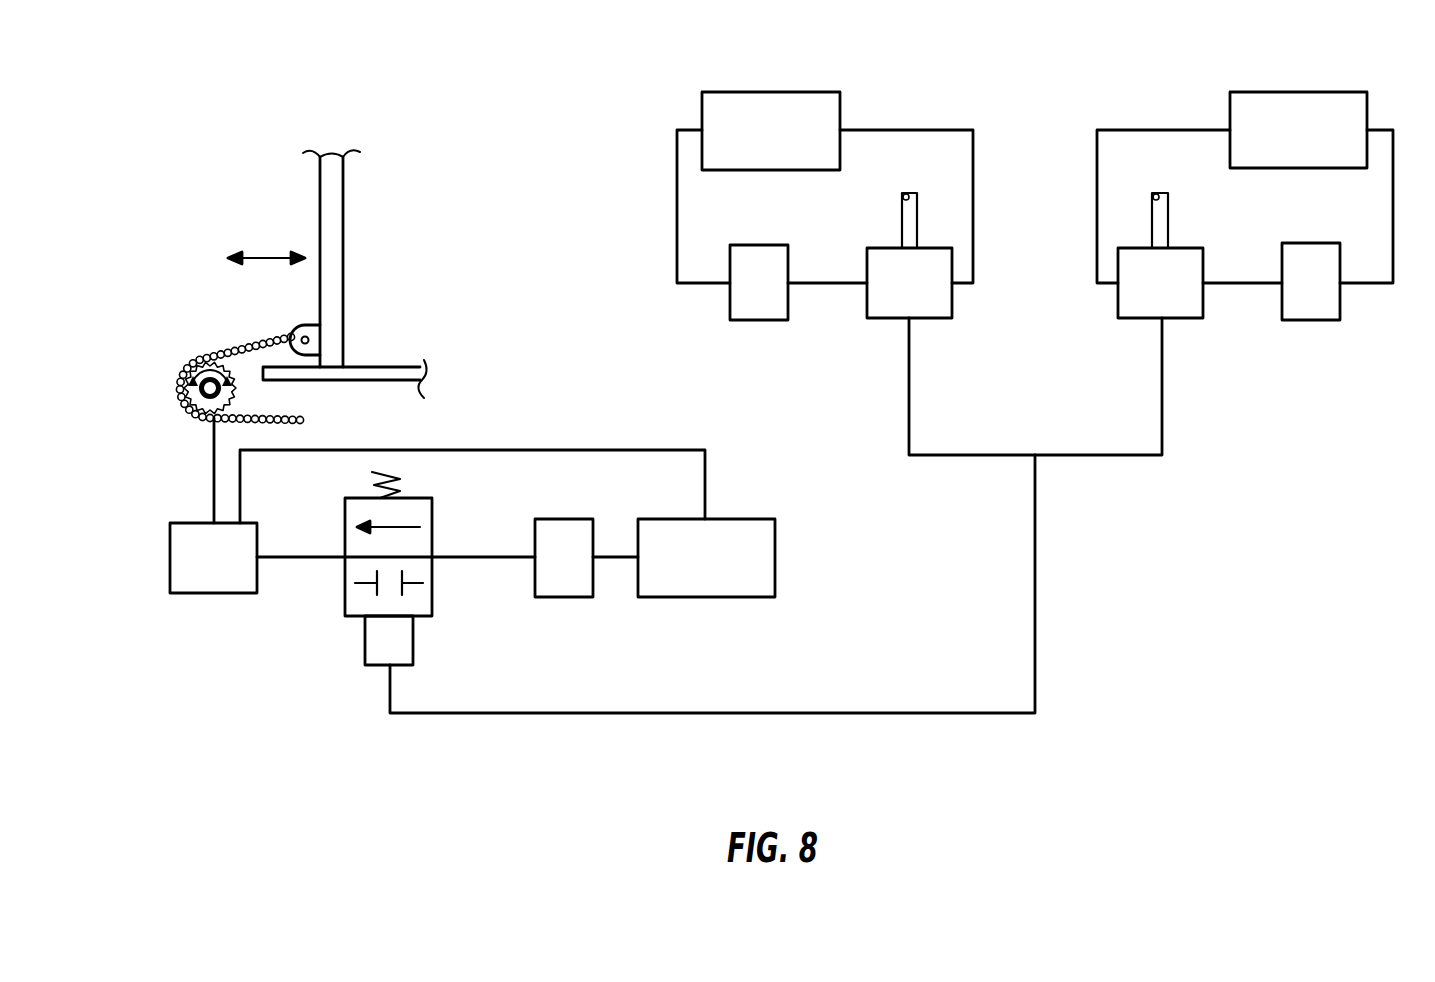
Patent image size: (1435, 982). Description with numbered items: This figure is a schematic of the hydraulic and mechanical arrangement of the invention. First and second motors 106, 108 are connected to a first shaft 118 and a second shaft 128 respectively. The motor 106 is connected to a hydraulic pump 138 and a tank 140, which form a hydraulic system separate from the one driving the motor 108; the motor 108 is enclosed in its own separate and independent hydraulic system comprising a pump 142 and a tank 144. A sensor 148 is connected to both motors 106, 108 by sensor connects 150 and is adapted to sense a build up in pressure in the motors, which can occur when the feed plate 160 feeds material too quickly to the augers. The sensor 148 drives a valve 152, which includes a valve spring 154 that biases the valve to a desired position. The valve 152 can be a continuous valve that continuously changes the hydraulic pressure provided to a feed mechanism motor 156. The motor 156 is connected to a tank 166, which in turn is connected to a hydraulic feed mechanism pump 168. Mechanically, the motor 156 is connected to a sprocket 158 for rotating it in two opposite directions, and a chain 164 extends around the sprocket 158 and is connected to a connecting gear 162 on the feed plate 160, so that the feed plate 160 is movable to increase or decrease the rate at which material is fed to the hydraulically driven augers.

The first motor 106 is at (895, 318).
The second motor 108 is at (1178, 318).
The first shaft 118 is at (900, 232).
The second shaft 128 is at (1150, 218).
The hydraulic pump 138 is at (762, 320).
The tank 140 is at (812, 92).
The pump 142 is at (1310, 320).
The tank 144 is at (1260, 92).
The sensor 148 is at (413, 650).
The sensor connects 150 is at (912, 405).
The valve 152 is at (345, 598).
The valve spring 154 is at (402, 484).
The feed mechanism motor 156 is at (202, 522).
The sprocket 158 is at (194, 418).
The feed plate 160 is at (343, 212).
The connecting gear 162 is at (305, 324).
The chain 164 is at (302, 420).
The tank 166 is at (753, 597).
The hydraulic feed mechanism pump 168 is at (572, 597).